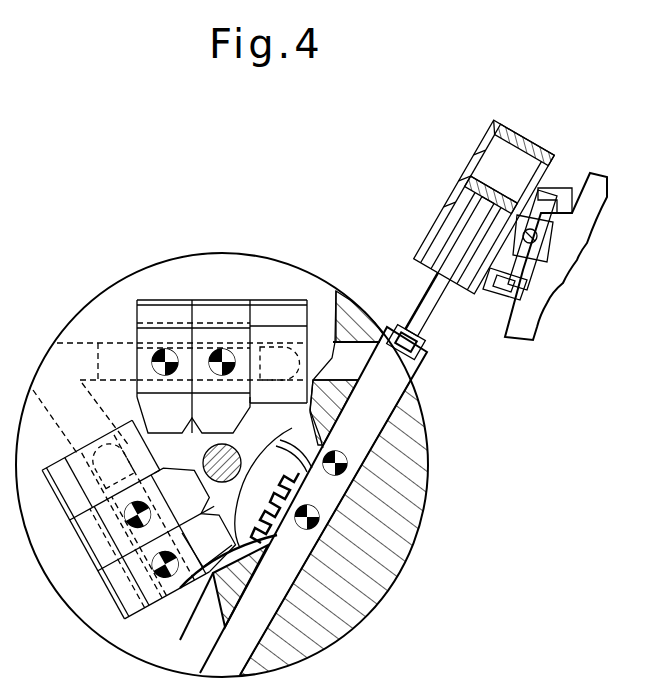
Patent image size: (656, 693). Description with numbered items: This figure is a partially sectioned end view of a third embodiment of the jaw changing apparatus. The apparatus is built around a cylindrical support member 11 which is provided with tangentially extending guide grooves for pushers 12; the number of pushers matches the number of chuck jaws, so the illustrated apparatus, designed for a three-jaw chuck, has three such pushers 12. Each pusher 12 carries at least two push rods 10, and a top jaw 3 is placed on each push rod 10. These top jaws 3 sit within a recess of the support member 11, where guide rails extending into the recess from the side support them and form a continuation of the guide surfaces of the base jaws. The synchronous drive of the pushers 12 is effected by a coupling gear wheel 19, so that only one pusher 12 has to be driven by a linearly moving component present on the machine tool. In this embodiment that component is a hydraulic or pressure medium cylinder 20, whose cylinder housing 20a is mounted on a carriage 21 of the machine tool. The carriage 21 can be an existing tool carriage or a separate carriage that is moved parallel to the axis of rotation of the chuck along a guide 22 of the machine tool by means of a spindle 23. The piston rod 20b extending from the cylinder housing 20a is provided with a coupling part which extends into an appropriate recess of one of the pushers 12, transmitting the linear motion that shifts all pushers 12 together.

The top jaw 3 is at (170, 459).
The push rod 10 is at (340, 520).
The cylindrical support member 11 is at (385, 562).
The pusher 12 is at (373, 393).
The coupling gear wheel 19 is at (343, 603).
The hydraulic or pressure medium cylinder 20 is at (428, 221).
The cylinder housing 20a is at (477, 157).
The piston rod 20b is at (420, 297).
The carriage 21 is at (507, 287).
The guide 22 is at (547, 208).
The spindle 23 is at (535, 250).